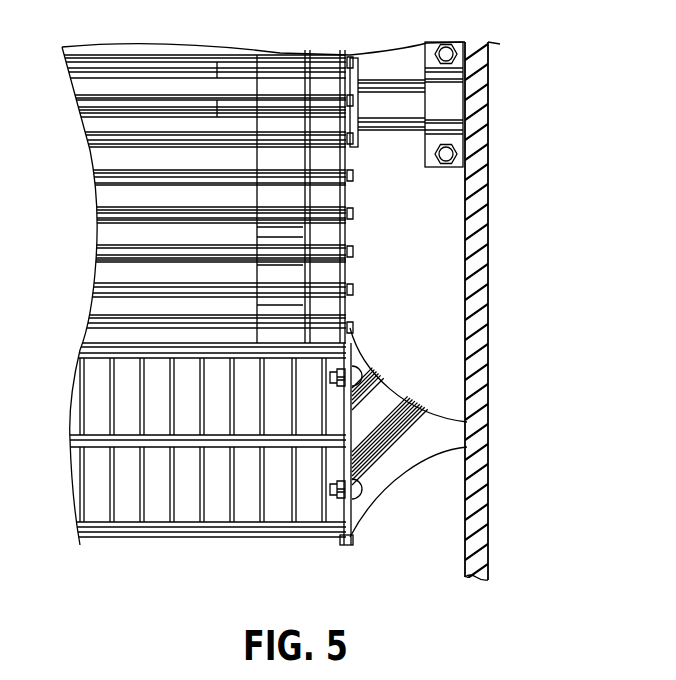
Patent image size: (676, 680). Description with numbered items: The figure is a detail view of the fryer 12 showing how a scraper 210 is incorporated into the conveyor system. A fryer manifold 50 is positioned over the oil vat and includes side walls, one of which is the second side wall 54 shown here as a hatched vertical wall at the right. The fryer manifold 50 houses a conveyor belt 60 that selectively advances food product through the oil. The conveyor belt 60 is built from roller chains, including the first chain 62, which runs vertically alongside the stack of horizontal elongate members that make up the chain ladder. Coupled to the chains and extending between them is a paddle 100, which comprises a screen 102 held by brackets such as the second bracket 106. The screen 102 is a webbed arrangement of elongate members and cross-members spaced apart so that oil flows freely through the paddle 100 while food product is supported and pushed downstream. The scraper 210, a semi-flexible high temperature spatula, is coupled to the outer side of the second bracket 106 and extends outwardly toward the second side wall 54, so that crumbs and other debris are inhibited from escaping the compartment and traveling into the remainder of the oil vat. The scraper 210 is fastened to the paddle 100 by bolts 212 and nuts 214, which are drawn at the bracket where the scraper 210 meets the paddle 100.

The fryer 12 is at (513, 125).
The fryer manifold 50 is at (491, 328).
The second side wall 54 is at (482, 378).
The conveyor belt 60 is at (129, 57).
The first chain 62 is at (356, 213).
The paddle 100 is at (105, 553).
The screen 102 is at (180, 539).
The second bracket 106 is at (351, 533).
The scraper 210 is at (394, 386).
The bolt 212 is at (354, 490).
The nut 214 is at (333, 493).